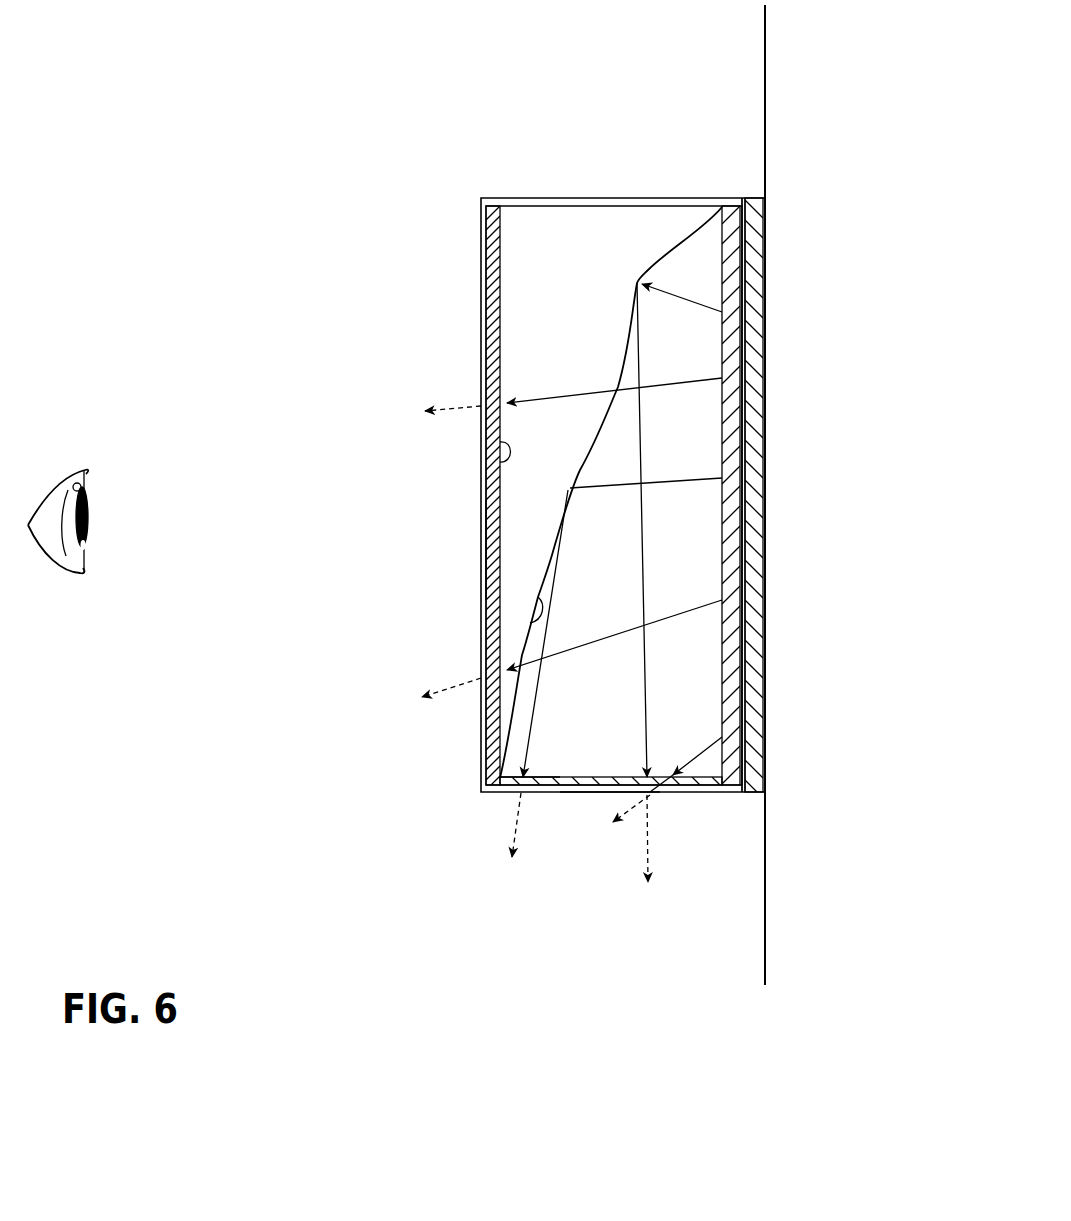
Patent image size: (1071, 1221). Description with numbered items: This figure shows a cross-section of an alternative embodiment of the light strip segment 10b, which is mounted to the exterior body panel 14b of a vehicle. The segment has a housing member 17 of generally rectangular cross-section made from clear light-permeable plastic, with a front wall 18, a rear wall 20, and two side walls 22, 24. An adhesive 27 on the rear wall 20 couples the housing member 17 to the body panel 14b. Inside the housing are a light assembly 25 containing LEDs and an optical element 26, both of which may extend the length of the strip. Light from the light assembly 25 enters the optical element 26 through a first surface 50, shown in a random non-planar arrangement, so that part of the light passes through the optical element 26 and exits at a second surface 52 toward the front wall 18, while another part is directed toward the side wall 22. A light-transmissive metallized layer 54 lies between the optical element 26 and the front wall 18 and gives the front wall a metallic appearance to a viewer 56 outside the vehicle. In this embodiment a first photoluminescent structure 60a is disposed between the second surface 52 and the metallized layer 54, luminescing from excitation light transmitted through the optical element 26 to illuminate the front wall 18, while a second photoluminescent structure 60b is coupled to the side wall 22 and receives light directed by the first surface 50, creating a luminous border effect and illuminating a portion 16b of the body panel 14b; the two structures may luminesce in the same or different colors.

The light strip segment 10b is at (452, 203).
The exterior body panel 14b is at (763, 62).
The portion of the body panel 16b is at (765, 937).
The housing member 17 is at (525, 190).
The front wall 18 is at (487, 548).
The rear wall 20 is at (743, 258).
The side wall 22 is at (603, 795).
The side wall 24 is at (628, 198).
The light assembly 25 is at (732, 233).
The optical element 26 is at (603, 258).
The adhesive 27 is at (758, 303).
The first surface 50 is at (515, 638).
The second surface 52 is at (493, 458).
The metallized layer 54 is at (488, 743).
The viewer 56 is at (52, 505).
The first photoluminescent structure 60a is at (483, 214).
The second photoluminescent structure 60b is at (512, 775).